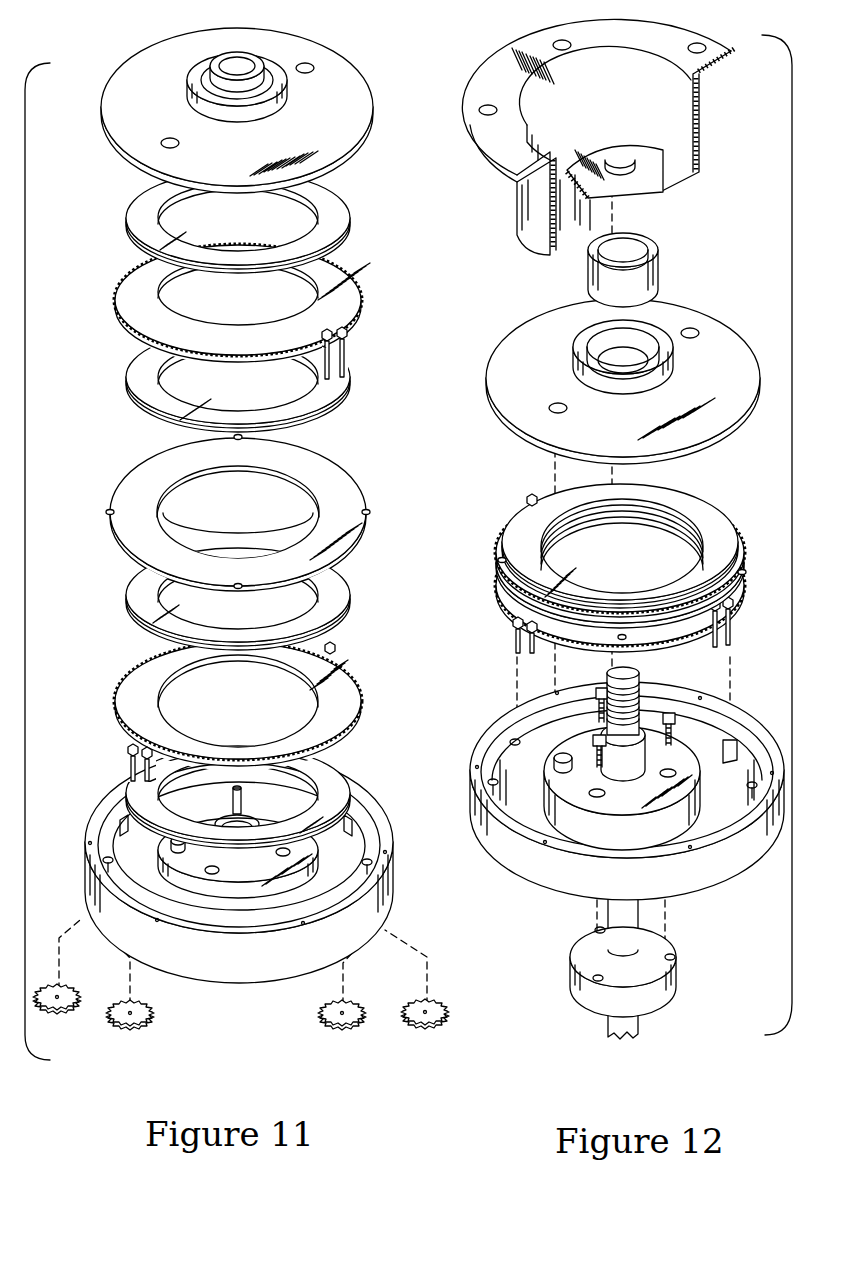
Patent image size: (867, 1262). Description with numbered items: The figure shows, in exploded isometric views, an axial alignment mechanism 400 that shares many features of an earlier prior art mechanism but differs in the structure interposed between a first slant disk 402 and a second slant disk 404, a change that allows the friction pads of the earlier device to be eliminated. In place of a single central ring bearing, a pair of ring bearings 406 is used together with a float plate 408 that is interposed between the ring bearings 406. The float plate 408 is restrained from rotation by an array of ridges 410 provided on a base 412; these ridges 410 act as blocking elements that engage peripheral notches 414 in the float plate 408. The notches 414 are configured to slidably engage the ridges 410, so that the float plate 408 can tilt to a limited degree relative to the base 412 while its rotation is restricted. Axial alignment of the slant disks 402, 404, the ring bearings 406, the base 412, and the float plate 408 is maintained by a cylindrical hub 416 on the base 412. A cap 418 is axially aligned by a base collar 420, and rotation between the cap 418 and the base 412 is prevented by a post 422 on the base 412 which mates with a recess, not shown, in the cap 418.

In FIG. 11, the axial alignment mechanism 400 is at (406, 102).
In FIG. 12, the axial alignment mechanism 400 is at (726, 212).
In FIG. 11, the first slant disk 402 is at (132, 702).
In FIG. 12, the first slant disk 402 is at (515, 618).
In FIG. 11, the second slant disk 404 is at (130, 287).
In FIG. 12, the second slant disk 404 is at (730, 530).
In FIG. 11, the ring bearings 406 is at (137, 785).
In FIG. 12, the ring bearings 406 is at (697, 503).
In FIG. 11, the float plate 408 is at (118, 478).
In FIG. 12, the float plate 408 is at (489, 533).
In FIG. 11, the ridges 410 is at (131, 768).
In FIG. 12, the ridges 410 is at (492, 780).
In FIG. 11, the base 412 is at (232, 982).
In FIG. 12, the base 412 is at (495, 715).
In FIG. 11, the peripheral notches 414 is at (366, 510).
In FIG. 12, the peripheral notches 414 is at (502, 562).
In FIG. 11, the cylindrical hub 416 is at (262, 920).
In FIG. 12, the cylindrical hub 416 is at (667, 833).
In FIG. 11, the cap 418 is at (120, 125).
In FIG. 12, the cap 418 is at (723, 330).
In FIG. 12, the base collar 420 is at (460, 847).
In FIG. 12, the post 422 is at (554, 783).